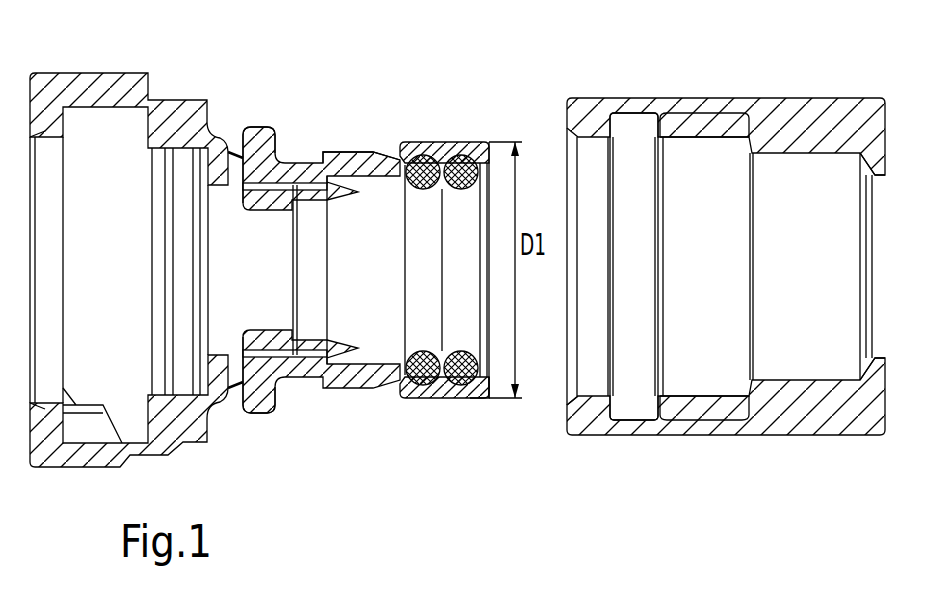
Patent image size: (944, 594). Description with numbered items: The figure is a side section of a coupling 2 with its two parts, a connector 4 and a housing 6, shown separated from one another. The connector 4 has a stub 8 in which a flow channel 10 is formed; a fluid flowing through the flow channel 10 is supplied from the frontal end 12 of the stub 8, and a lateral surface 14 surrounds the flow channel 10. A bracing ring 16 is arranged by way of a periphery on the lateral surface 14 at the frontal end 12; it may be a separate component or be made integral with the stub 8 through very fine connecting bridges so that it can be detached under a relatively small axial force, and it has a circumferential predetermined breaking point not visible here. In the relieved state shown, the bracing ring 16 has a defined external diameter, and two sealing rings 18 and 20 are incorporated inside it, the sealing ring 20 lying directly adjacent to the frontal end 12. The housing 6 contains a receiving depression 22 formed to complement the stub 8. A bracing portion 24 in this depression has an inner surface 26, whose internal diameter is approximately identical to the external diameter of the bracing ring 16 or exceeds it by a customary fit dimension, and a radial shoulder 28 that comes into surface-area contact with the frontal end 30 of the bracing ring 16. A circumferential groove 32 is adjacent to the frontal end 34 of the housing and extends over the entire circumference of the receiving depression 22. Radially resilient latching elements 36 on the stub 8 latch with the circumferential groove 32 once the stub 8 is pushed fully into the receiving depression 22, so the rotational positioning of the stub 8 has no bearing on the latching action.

The coupling 2 is at (531, 86).
The connector 4 is at (172, 108).
The housing 6 is at (735, 106).
The stub 8 is at (304, 167).
The flow channel 10 is at (352, 323).
The frontal end 12 is at (416, 142).
The lateral surface 14 is at (360, 150).
The bracing ring 16 is at (442, 380).
The sealing ring 18 is at (476, 142).
The sealing ring 20 is at (440, 142).
The receiving depression 22 is at (728, 378).
The bracing portion 24 is at (703, 115).
The inner surface 26 is at (697, 140).
The radial shoulder 28 is at (760, 148).
The frontal end 30 is at (492, 388).
The circumferential groove 32 is at (634, 122).
The frontal end 34 is at (560, 416).
The latching elements 36 is at (263, 130).